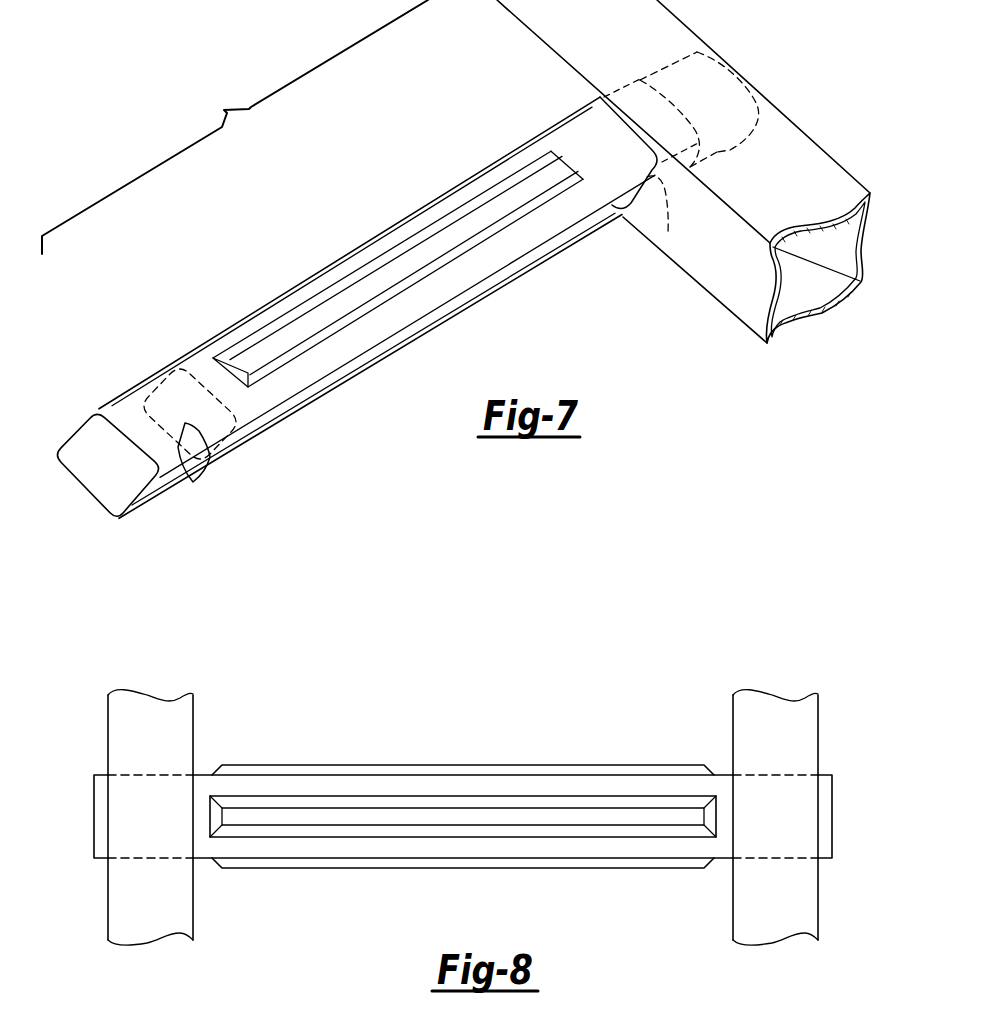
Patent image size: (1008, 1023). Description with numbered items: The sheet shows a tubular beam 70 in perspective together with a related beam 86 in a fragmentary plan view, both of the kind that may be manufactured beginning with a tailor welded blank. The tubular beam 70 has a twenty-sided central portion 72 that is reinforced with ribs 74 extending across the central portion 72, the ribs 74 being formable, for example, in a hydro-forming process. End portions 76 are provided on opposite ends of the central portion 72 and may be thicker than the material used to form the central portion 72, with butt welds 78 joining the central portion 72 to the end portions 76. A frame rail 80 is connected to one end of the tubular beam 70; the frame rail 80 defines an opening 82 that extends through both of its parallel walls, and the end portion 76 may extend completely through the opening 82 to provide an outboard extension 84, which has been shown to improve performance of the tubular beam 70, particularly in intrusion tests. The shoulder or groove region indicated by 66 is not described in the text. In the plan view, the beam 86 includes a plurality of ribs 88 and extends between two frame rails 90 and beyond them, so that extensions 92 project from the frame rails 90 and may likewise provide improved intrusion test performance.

In FIG. 7, the groove 66 is at (157, 383).
In FIG. 7, the tubular beam 70 is at (300, 423).
In FIG. 7, the 20-sided central portion 72 is at (235, 127).
In FIG. 7, the ribs 74 is at (452, 243).
In FIG. 7, the end portions 76 is at (123, 418).
In FIG. 7, the butt welds 78 is at (181, 482).
In FIG. 7, the frame rail 80 is at (793, 147).
In FIG. 7, the opening 82 is at (664, 214).
In FIG. 7, the outboard extensions 84 is at (720, 90).
In FIG. 8, the beam 86 is at (258, 785).
In FIG. 8, the ribs 88 is at (402, 764).
In FIG. 8, the frame rails 90 is at (125, 908).
In FIG. 8, the extensions 92 is at (94, 817).